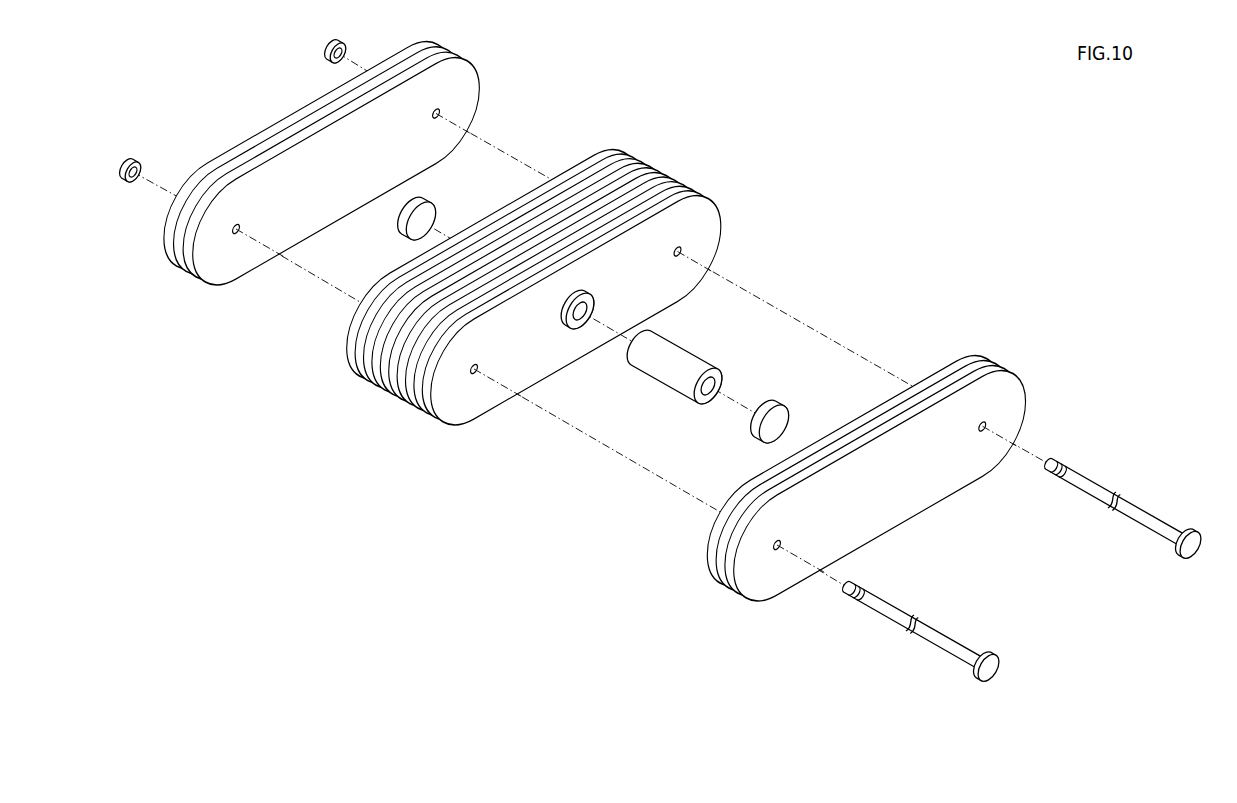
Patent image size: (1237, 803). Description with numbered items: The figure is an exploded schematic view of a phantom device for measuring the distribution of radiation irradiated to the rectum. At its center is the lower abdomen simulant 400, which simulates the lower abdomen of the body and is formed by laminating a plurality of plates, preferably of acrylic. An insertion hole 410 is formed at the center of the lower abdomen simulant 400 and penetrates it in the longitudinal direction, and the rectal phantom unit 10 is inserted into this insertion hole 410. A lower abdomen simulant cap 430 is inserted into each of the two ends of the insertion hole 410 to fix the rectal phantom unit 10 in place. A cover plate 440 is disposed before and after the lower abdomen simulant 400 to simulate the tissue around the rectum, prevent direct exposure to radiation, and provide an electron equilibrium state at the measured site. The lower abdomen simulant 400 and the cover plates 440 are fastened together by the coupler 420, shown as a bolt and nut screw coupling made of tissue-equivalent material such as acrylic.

The rectal phantom unit 10 is at (712, 347).
The lower abdomen simulant 400 is at (704, 229).
The insertion hole 410 is at (580, 313).
The coupler 420 is at (892, 609).
The lower abdomen simulant cap 430 is at (428, 212).
The cover plate 440 is at (462, 95).